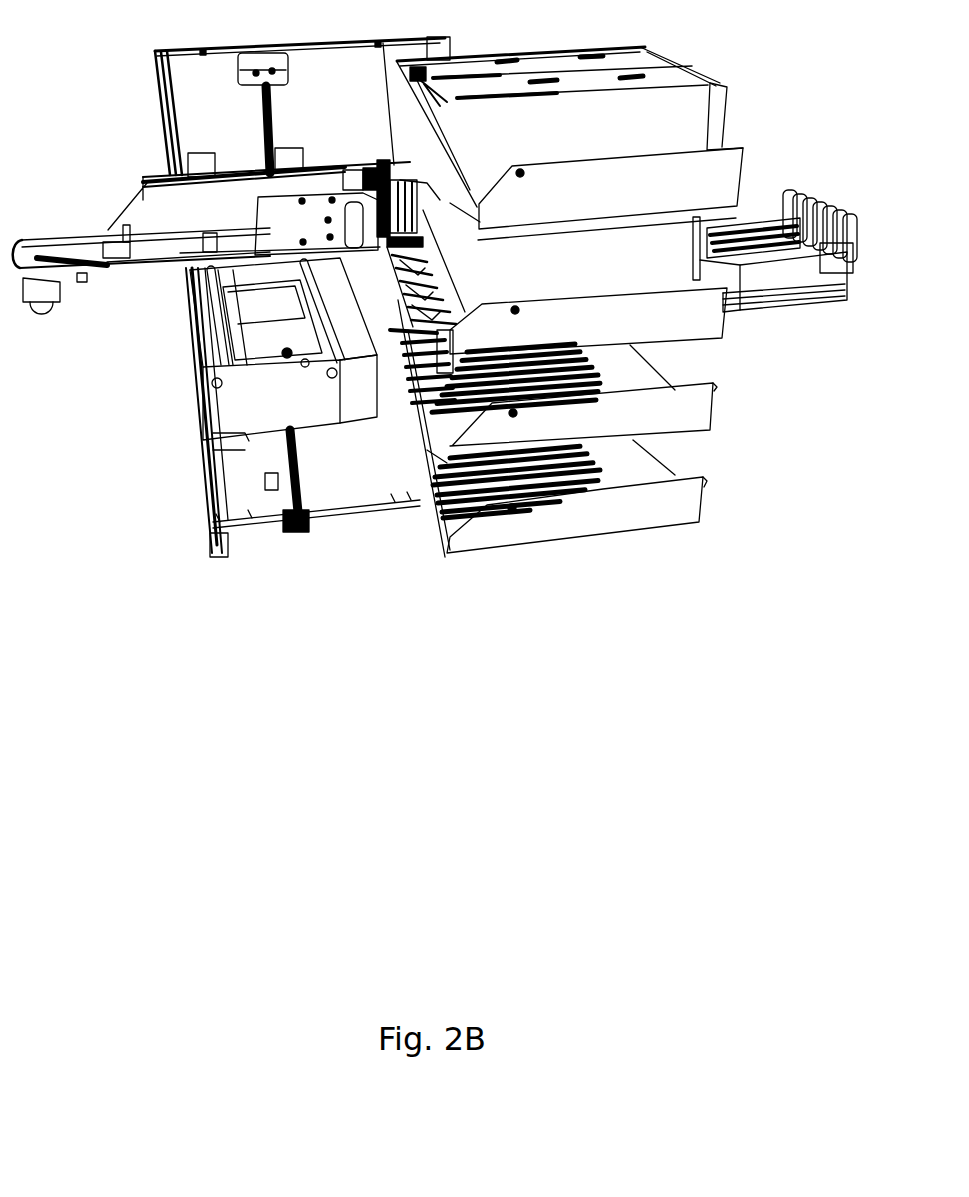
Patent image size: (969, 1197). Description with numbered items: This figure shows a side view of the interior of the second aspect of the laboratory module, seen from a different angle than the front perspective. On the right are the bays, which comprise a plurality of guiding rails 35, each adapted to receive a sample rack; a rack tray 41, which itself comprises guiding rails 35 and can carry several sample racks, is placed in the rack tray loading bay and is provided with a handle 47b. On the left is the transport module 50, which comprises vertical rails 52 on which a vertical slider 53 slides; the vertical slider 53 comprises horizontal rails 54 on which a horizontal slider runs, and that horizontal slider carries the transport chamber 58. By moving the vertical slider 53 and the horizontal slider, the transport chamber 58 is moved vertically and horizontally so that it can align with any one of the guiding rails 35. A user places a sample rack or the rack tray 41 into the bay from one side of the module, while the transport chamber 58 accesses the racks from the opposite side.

The guiding rails 35 is at (455, 535).
The rack tray 41 is at (773, 282).
The handle 47b is at (858, 263).
The transport module 50 is at (53, 422).
The vertical rails 52 is at (273, 128).
The vertical slider 53 is at (187, 275).
The horizontal rails 54 is at (200, 347).
The transport chamber 58 is at (145, 203).